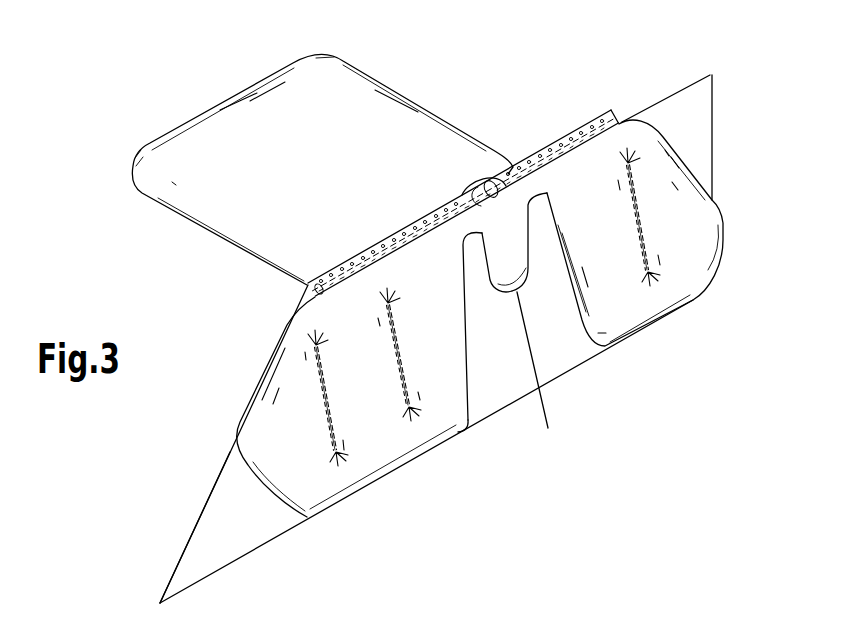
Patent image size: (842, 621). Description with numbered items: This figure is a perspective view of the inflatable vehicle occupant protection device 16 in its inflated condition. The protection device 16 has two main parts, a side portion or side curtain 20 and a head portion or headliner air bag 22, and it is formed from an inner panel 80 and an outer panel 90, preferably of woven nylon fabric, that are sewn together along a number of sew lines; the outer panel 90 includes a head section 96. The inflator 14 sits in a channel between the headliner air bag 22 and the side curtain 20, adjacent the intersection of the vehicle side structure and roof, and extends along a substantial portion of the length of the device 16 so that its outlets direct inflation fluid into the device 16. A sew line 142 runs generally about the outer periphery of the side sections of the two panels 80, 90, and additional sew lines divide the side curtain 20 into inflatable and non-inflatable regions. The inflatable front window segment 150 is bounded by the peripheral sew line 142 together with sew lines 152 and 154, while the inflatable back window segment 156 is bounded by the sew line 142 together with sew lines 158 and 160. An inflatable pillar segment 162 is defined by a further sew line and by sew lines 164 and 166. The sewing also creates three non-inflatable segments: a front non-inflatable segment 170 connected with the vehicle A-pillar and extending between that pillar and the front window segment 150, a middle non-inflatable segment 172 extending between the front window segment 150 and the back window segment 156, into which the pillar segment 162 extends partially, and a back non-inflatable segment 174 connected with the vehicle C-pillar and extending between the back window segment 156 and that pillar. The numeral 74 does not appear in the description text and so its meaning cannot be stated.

The inflator 14 is at (486, 187).
The inflatable vehicle occupant protection device 16 is at (558, 92).
The side curtain 20 is at (733, 264).
The headliner air bag 22 is at (417, 89).
The lid top portion 74 is at (340, 7).
The inner panel 80 is at (233, 247).
The outer panel 90 is at (231, 212).
The head section 96 is at (172, 182).
The sew line 142 is at (263, 542).
The inflatable front window segment 150 is at (377, 441).
The sew line 152 is at (260, 480).
The sew line 154 is at (467, 360).
The inflatable back window segment 156 is at (670, 281).
The sew line 158 is at (550, 350).
The sew line 160 is at (680, 155).
The inflatable pillar segment 162 is at (544, 375).
The sew line 164 is at (485, 257).
The sew line 166 is at (532, 248).
The front non-inflatable segment 170 is at (225, 522).
The middle non-inflatable segment 172 is at (578, 313).
The back non-inflatable segment 174 is at (695, 105).